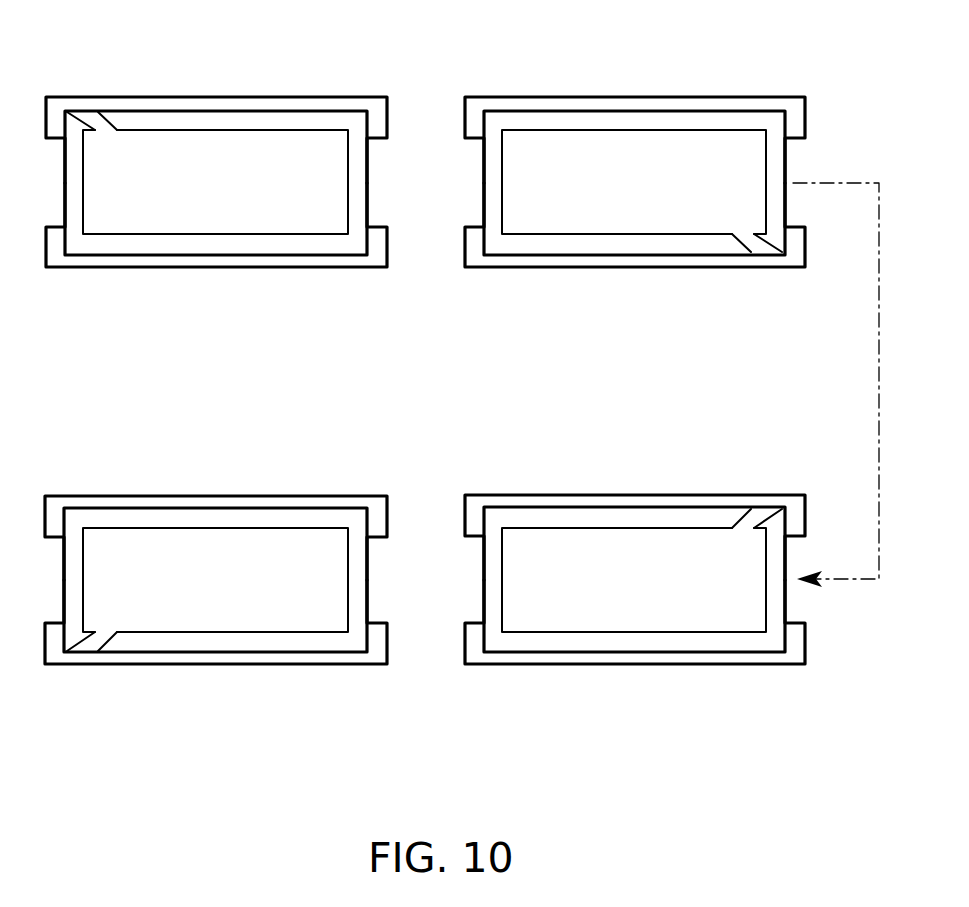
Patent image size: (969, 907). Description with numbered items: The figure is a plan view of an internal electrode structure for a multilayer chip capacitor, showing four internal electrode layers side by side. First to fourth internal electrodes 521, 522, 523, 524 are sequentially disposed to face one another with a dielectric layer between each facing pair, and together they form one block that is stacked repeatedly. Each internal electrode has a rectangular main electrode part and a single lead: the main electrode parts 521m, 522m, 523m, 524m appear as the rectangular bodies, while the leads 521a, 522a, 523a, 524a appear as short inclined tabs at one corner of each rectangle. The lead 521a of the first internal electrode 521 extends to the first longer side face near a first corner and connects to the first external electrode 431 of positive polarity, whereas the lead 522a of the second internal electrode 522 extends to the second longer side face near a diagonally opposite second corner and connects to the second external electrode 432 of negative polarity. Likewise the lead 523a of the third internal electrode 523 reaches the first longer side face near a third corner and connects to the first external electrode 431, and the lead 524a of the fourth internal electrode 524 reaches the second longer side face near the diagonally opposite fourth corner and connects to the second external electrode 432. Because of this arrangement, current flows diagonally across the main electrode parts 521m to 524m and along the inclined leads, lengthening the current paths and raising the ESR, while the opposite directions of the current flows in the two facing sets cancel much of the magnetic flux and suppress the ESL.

The first external electrode 431 is at (207, 102).
The second external electrode 432 is at (198, 266).
The first internal electrode 521 is at (234, 207).
The main electrode part of first internal electrode 521m is at (279, 146).
The lead of first internal electrode 521a is at (103, 118).
The second internal electrode 522 is at (564, 205).
The main electrode part of second internal electrode 522m is at (690, 146).
The lead of second internal electrode 522a is at (748, 244).
The third internal electrode 523 is at (661, 607).
The main electrode part of third internal electrode 523m is at (548, 538).
The lead of third internal electrode 523a is at (738, 526).
The fourth internal electrode 524 is at (234, 607).
The main electrode part of fourth internal electrode 524m is at (287, 540).
The lead of fourth internal electrode 524a is at (100, 643).